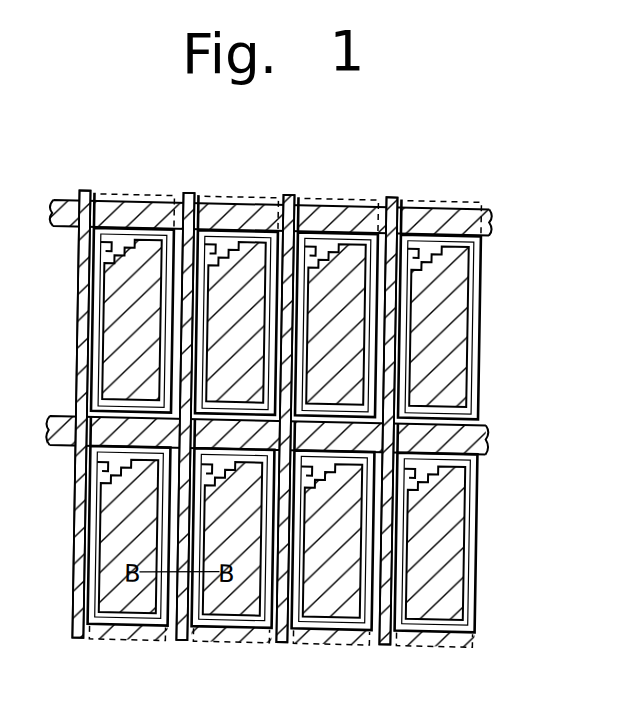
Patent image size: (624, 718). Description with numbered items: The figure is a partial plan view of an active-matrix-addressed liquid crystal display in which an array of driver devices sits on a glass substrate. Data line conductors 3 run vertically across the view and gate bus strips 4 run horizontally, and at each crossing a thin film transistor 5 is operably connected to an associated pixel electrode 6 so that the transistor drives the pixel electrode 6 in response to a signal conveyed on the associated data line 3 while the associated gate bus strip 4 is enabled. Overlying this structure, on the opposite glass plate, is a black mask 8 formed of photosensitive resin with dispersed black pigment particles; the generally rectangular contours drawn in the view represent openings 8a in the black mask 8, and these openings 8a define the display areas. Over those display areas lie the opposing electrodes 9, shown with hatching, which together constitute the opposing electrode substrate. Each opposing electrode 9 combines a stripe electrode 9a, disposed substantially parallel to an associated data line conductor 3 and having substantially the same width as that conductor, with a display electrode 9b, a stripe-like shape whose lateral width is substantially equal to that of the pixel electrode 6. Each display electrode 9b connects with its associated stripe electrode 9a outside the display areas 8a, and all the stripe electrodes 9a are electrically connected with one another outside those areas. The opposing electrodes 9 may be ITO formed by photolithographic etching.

The data line conductor 3 is at (395, 550).
The gate bus strip 4 is at (480, 438).
The thin film transistor 5 is at (478, 489).
The pixel electrode 6 is at (450, 579).
The black mask 8 is at (175, 630).
The opening 8a is at (423, 609).
The opposing electrode 9 is at (173, 189).
The stripe electrode 9a is at (184, 199).
The display electrode 9b is at (239, 198).